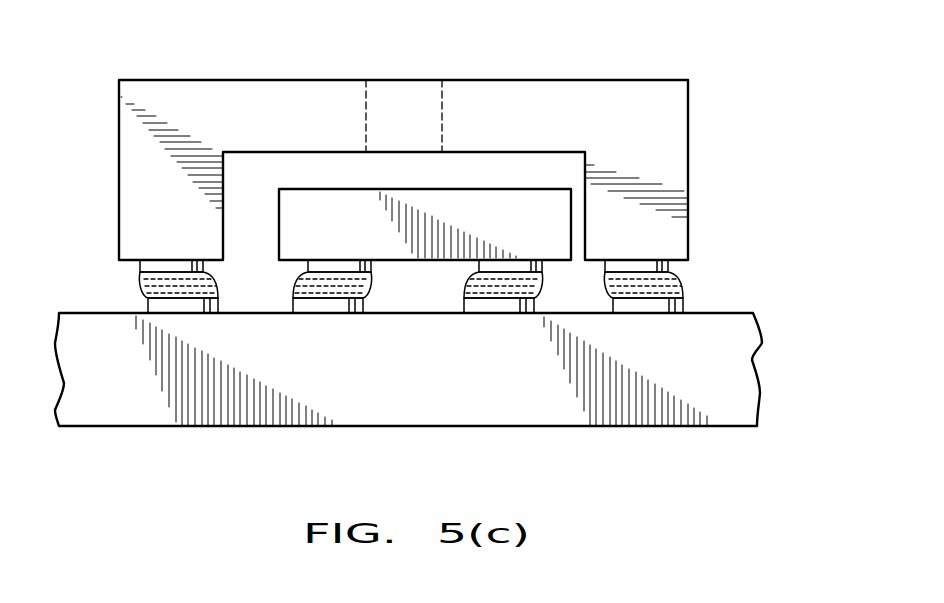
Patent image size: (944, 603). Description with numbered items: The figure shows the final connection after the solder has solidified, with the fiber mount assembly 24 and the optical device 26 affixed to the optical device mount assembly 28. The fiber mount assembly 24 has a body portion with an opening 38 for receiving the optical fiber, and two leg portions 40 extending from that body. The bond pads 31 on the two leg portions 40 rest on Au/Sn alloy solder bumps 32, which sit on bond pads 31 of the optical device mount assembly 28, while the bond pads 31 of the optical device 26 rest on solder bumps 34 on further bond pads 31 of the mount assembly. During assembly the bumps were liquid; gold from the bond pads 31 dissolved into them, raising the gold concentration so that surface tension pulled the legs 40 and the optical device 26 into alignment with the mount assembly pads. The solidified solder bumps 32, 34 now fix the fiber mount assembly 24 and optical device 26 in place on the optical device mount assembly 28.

The fiber mount assembly 24 is at (588, 79).
The optical device 26 is at (473, 197).
The optical device mount assembly 28 is at (730, 365).
The bond pads 31 is at (290, 306).
The solder bumps 32 is at (145, 307).
The solder bumps 34 is at (465, 303).
The opening 38 is at (374, 102).
The leg portions 40 is at (130, 232).